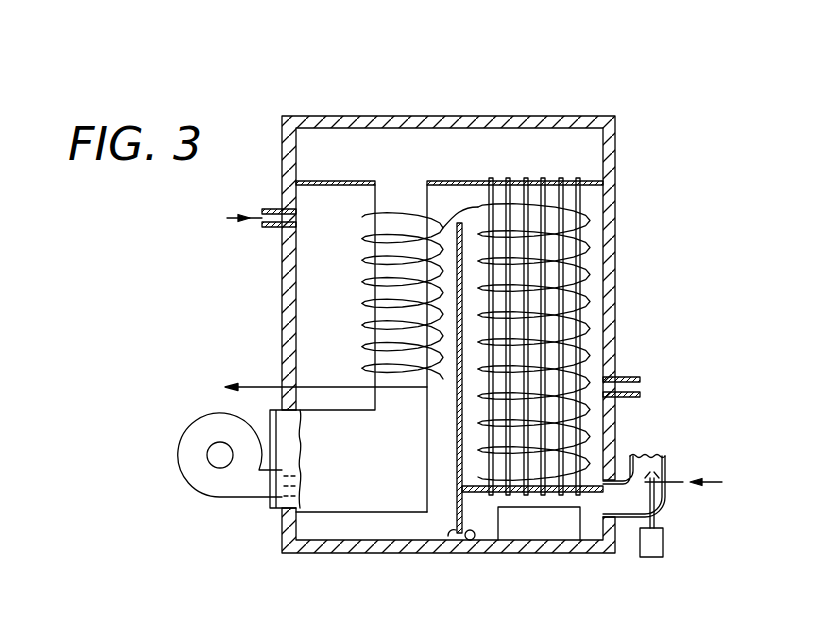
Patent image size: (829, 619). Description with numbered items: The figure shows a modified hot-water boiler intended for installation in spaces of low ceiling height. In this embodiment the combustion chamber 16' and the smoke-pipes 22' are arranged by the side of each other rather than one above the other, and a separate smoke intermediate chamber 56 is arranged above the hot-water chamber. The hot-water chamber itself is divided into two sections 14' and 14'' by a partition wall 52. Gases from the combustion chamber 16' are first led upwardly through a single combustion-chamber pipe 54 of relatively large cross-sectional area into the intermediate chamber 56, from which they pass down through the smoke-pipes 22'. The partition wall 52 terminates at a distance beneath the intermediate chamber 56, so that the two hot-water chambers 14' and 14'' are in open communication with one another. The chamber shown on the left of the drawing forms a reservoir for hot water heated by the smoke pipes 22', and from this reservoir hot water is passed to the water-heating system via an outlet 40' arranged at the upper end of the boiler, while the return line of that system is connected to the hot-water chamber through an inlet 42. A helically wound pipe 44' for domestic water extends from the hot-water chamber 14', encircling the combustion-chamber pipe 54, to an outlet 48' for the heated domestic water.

The hot-water chamber section 14' is at (379, 413).
The hot-water chamber section 14'' is at (493, 334).
The combustion chamber 16' is at (239, 483).
The smoke pipes 22' is at (532, 299).
The outlet 40' is at (237, 242).
The inlet 42 is at (640, 378).
The helically wound pipe 44' is at (582, 342).
The outlet 48' is at (326, 356).
The partition wall 52 is at (452, 533).
The combustion-chamber pipe 54 is at (392, 182).
The intermediate chamber 56 is at (400, 140).